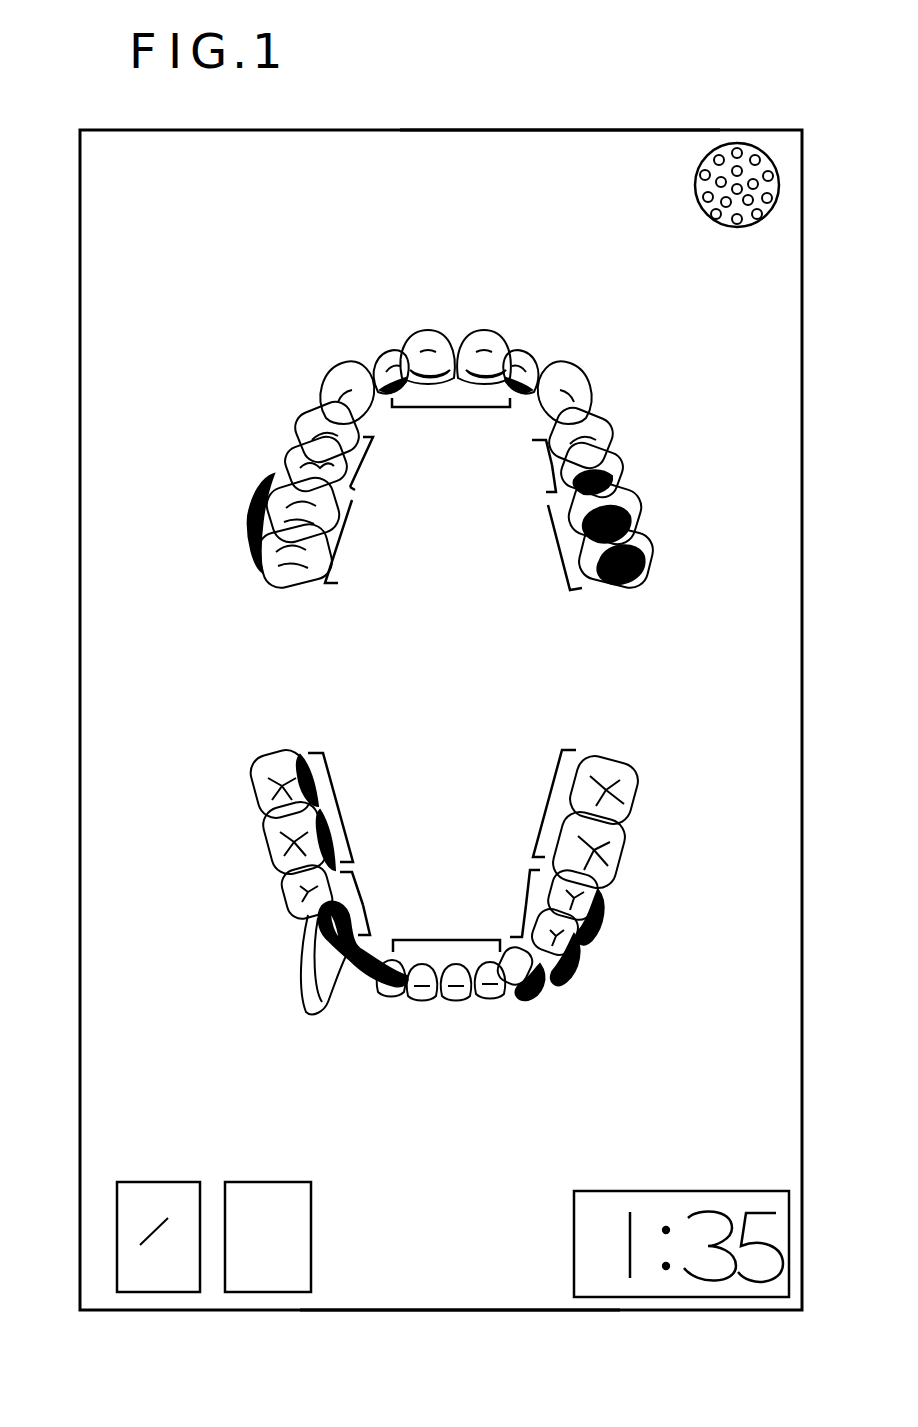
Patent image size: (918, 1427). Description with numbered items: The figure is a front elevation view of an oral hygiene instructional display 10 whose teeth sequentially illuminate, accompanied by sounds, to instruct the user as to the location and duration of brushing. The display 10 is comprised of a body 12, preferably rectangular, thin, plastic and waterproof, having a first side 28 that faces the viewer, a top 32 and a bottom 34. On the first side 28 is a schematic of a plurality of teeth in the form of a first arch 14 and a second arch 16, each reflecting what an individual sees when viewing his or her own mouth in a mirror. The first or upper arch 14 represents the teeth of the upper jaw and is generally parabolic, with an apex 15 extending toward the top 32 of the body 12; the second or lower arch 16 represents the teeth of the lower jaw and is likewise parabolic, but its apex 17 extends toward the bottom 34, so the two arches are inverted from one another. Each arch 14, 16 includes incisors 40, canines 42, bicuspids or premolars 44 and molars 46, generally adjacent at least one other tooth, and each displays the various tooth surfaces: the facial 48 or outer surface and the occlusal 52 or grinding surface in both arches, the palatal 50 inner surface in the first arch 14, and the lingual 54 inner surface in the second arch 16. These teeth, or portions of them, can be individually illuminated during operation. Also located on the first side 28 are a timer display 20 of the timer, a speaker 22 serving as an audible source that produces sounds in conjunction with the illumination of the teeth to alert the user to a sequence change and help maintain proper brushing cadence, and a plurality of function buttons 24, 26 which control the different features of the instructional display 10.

The oral hygiene instructional display 10 is at (68, 922).
The body 12 is at (802, 792).
The first arch 14 is at (245, 447).
The apex 15 is at (452, 330).
The second arch 16 is at (256, 938).
The apex 17 is at (432, 1000).
The timer display 20 is at (802, 1245).
The speaker 22 is at (780, 185).
The function button 24 is at (138, 1292).
The function button 26 is at (252, 1292).
The first side 28 is at (190, 173).
The top 32 is at (555, 130).
The bottom 34 is at (470, 1310).
The incisors 40 is at (450, 408).
The canines 42 is at (535, 437).
The bicuspids or premolars 44 is at (552, 462).
The molars 46 is at (558, 540).
The facial surface 48 is at (250, 562).
The palatal surface 50 is at (529, 309).
The occlusal surface 52 is at (600, 460).
The lingual surface 54 is at (312, 786).